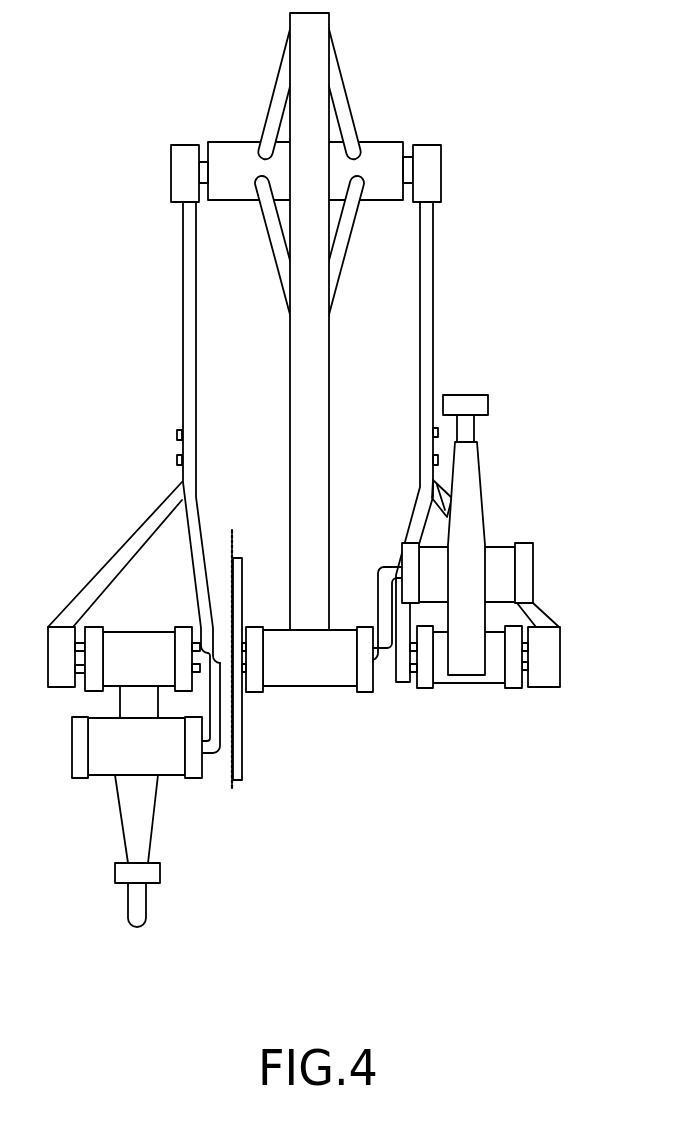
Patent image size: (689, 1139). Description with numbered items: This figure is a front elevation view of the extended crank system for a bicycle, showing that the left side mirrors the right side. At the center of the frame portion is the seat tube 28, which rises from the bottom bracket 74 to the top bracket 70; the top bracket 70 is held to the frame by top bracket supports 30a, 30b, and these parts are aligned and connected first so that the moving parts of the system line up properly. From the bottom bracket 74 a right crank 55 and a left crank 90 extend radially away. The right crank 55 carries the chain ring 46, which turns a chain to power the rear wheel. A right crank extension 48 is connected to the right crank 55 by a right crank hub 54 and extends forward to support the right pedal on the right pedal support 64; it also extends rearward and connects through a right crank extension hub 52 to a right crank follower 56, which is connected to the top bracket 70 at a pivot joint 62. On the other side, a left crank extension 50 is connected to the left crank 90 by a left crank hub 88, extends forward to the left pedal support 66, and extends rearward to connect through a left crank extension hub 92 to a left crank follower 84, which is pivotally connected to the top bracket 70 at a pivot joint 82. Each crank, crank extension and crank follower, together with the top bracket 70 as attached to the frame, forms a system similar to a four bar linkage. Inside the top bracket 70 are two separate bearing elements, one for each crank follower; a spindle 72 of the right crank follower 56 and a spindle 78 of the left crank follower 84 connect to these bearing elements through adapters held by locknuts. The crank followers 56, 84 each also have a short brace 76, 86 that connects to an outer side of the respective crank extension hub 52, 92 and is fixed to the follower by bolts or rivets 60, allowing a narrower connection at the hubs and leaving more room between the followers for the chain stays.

The seat tube 28 is at (322, 41).
The top bracket support 30a is at (272, 97).
The top bracket support 30b is at (268, 228).
The top bracket 70 is at (238, 150).
The spindle 72 is at (204, 162).
The spindle 78 is at (412, 168).
The pivot joint 62 is at (171, 188).
The pivot joint 82 is at (441, 172).
The right crank follower 56 is at (182, 342).
The left crank follower 84 is at (433, 305).
The bolts or rivets 60 is at (177, 435).
The left pedal support 66 is at (488, 404).
The short brace 86 is at (440, 488).
The left crank extension 50 is at (478, 513).
The left crank hub 88 is at (515, 568).
The left crank extension hub 92 is at (495, 688).
The left crank 90 is at (382, 567).
The bottom bracket 74 is at (313, 689).
The chain ring 46 is at (231, 530).
The short brace 76 is at (97, 587).
The right crank extension hub 52 is at (143, 632).
The right crank hub 54 is at (80, 777).
The right crank 55 is at (209, 748).
The right crank extension 48 is at (150, 835).
The right pedal support 64 is at (160, 879).